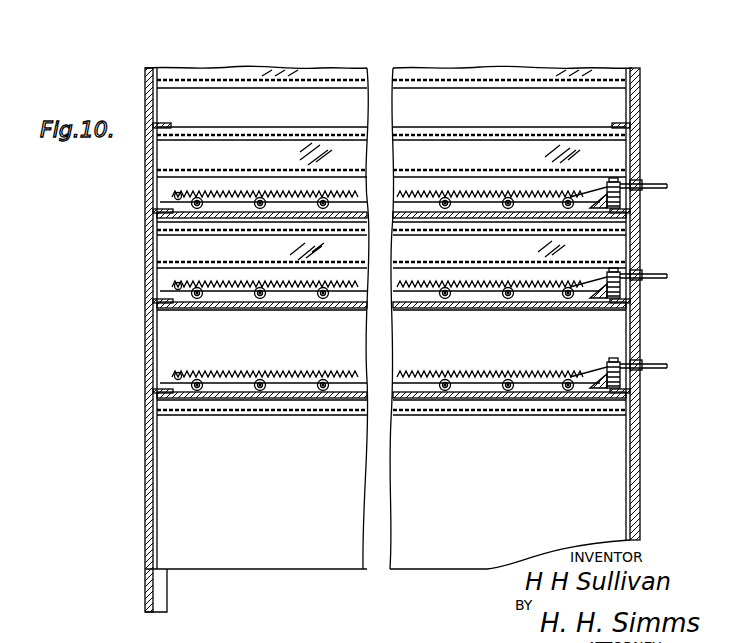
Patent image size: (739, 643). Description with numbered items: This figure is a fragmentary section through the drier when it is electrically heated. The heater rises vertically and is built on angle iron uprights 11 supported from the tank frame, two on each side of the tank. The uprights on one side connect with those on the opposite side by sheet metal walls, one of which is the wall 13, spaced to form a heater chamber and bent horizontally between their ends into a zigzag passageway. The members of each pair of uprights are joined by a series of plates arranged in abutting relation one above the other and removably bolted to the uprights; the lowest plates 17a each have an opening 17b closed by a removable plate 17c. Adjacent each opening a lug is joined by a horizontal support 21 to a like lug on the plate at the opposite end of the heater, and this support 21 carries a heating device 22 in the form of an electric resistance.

The angle iron uprights 11 is at (165, 590).
The wall 13 is at (319, 95).
The lowest plate 17a is at (672, 410).
The opening 17b is at (150, 92).
The removable plate 17c is at (145, 92).
The support 21 is at (218, 218).
The heating device 22 is at (250, 198).